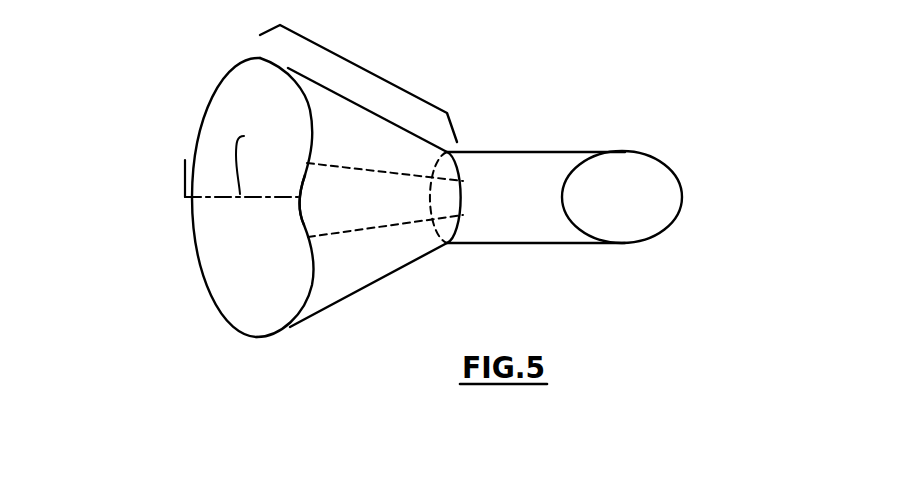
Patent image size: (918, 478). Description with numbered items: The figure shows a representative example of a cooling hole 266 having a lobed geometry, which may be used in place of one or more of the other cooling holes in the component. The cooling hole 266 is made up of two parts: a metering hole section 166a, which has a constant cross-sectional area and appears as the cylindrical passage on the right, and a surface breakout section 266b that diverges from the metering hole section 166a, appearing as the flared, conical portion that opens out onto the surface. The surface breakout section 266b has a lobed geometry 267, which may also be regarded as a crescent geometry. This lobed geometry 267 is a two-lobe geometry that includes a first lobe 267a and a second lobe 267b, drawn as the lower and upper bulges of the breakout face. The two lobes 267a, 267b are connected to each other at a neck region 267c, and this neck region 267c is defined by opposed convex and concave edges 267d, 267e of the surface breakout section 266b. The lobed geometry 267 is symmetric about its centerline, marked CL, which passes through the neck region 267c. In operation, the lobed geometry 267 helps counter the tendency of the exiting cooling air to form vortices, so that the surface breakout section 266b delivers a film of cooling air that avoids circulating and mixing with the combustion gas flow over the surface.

The cooling hole 266 is at (218, 349).
The surface breakout section 266b is at (363, 70).
The lobed geometry 267 is at (216, 307).
The first lobe 267a is at (208, 289).
The second lobe 267b is at (218, 92).
The neck region 267c is at (182, 176).
The convex edge 267d is at (185, 160).
The concave edge 267e is at (300, 213).
The metering hole section 166a is at (455, 140).